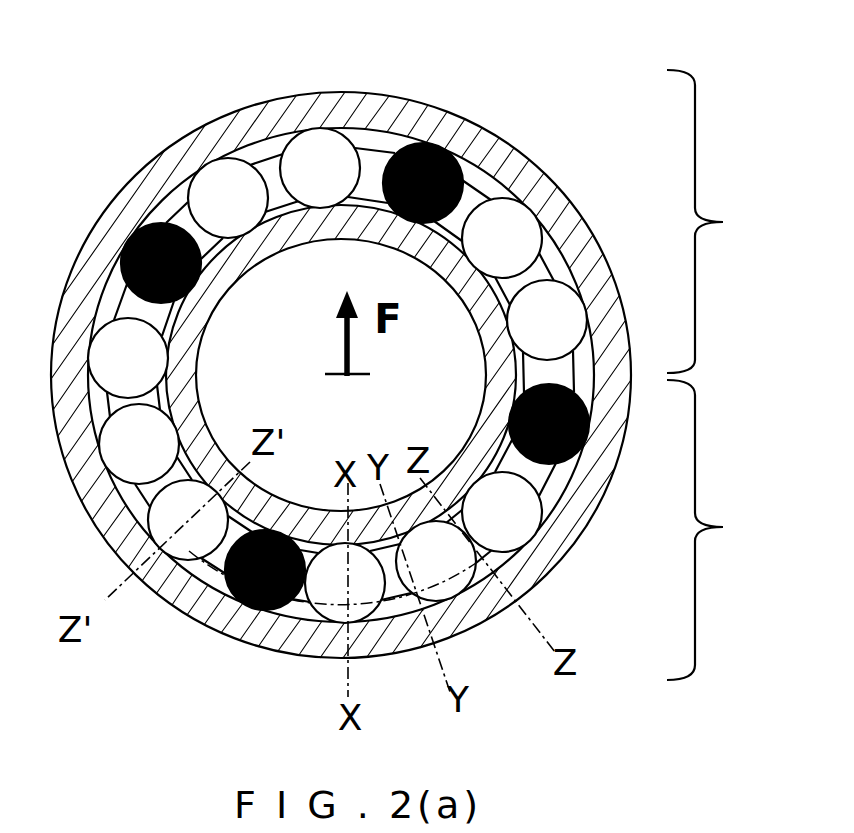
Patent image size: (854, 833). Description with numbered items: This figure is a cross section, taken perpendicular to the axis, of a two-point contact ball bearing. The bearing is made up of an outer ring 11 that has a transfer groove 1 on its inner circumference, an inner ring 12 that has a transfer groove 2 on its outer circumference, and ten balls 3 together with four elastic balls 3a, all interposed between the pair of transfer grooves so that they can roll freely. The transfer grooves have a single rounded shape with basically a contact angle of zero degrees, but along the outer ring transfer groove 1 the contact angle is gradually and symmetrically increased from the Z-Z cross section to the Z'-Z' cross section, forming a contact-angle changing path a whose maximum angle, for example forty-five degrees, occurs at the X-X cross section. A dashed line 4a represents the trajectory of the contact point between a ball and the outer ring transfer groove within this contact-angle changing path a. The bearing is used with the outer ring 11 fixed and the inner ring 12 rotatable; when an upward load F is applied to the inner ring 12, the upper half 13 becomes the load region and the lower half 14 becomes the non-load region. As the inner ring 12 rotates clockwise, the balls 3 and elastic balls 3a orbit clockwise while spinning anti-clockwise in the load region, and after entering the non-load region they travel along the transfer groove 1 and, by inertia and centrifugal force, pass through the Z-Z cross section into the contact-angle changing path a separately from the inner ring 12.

The transfer groove 1 is at (341, 372).
The outer ring 11 is at (162, 173).
The inner ring 12 is at (380, 227).
The transfer groove 2 is at (452, 212).
The balls 3 is at (325, 163).
The elastic balls 3a is at (432, 165).
The dashed line 4a is at (300, 608).
The contact-angle changing path a is at (262, 628).
The upper half 13 is at (723, 221).
The lower half 14 is at (723, 530).